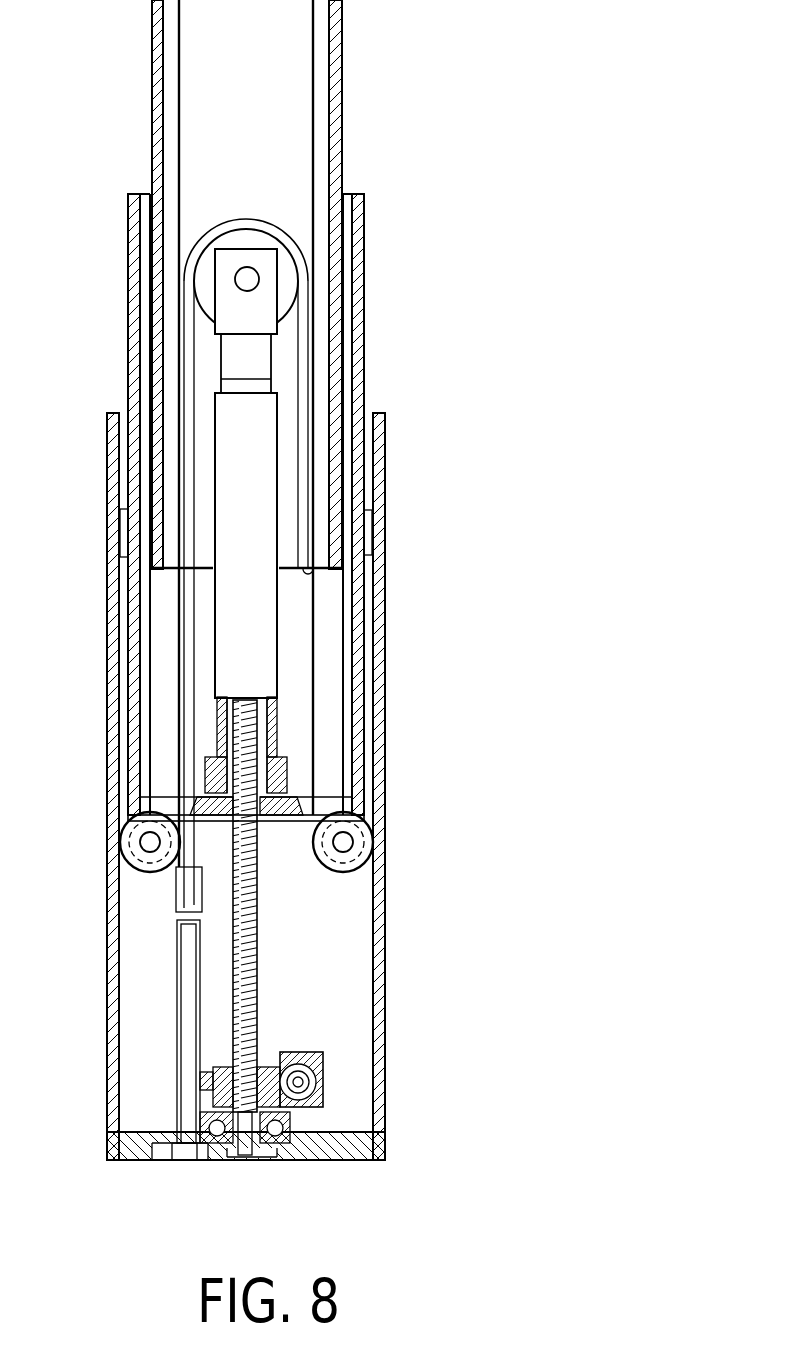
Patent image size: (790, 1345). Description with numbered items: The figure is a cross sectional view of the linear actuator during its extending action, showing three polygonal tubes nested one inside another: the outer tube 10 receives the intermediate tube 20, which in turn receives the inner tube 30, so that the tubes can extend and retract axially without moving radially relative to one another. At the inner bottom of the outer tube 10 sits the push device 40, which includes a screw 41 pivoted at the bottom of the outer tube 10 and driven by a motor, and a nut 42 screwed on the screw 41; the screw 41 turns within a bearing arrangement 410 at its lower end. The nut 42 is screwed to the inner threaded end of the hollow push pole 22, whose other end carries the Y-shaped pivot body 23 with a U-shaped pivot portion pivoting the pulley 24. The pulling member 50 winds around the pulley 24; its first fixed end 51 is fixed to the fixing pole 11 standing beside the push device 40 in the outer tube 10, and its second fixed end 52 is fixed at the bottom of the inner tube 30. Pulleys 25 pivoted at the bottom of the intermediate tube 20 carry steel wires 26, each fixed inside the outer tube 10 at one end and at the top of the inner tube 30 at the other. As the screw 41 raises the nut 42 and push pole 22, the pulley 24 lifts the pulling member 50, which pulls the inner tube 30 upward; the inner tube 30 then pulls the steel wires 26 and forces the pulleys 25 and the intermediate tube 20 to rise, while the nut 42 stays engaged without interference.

The outer tube 10 is at (375, 885).
The fixing pole 11 is at (188, 1093).
The intermediate tube 20 is at (362, 330).
The push pole 22 is at (233, 423).
The pivot body 23 is at (225, 273).
The pulley 24 is at (285, 280).
The pulley 25 is at (135, 828).
The steel wire 26 is at (315, 157).
The inner tube 30 is at (338, 65).
The push device 40 is at (300, 1113).
The screw 41 is at (258, 945).
The screw bearing collar 410 is at (258, 1002).
The nut 42 is at (287, 750).
The pulling member 50 is at (235, 217).
The first fixed end 51 is at (180, 912).
The second fixed end 52 is at (317, 567).